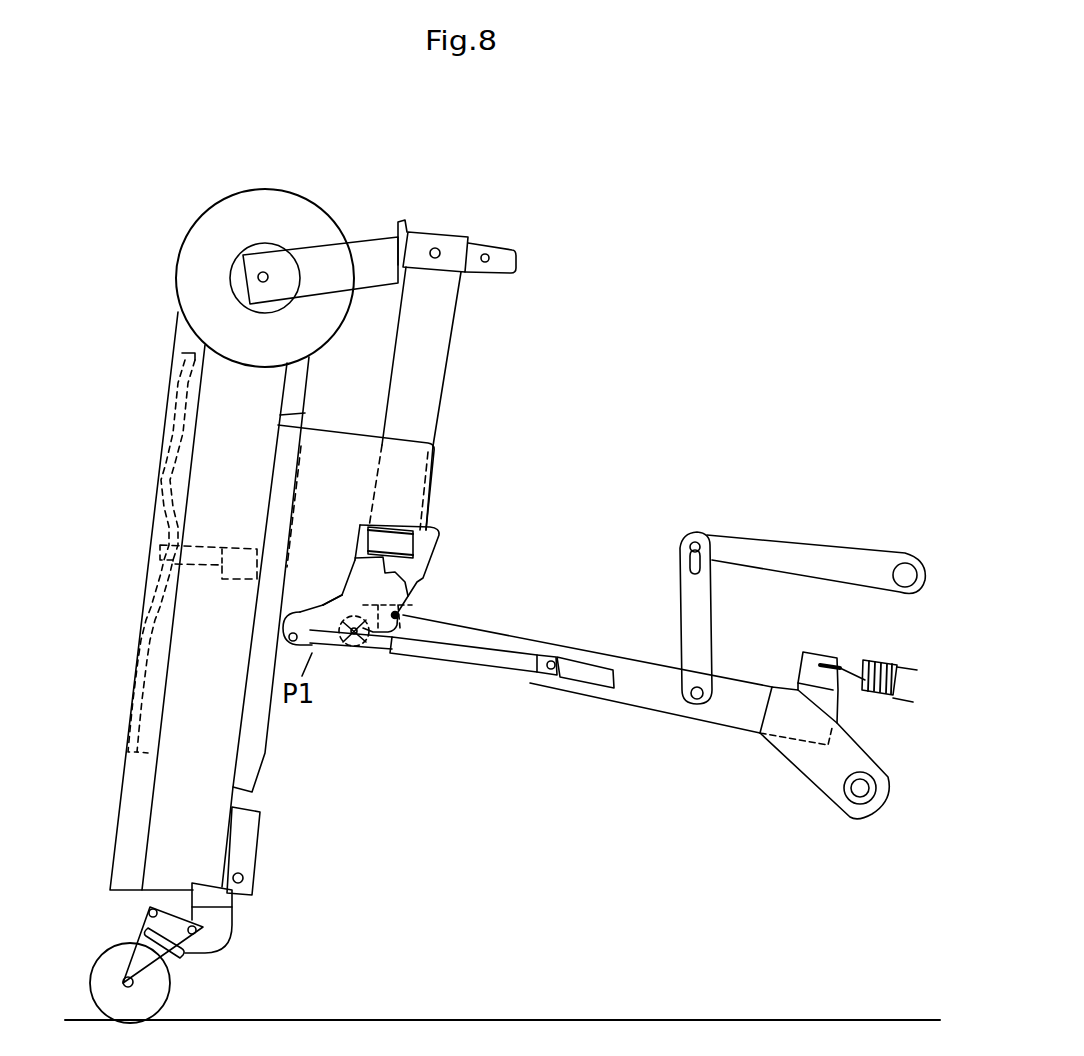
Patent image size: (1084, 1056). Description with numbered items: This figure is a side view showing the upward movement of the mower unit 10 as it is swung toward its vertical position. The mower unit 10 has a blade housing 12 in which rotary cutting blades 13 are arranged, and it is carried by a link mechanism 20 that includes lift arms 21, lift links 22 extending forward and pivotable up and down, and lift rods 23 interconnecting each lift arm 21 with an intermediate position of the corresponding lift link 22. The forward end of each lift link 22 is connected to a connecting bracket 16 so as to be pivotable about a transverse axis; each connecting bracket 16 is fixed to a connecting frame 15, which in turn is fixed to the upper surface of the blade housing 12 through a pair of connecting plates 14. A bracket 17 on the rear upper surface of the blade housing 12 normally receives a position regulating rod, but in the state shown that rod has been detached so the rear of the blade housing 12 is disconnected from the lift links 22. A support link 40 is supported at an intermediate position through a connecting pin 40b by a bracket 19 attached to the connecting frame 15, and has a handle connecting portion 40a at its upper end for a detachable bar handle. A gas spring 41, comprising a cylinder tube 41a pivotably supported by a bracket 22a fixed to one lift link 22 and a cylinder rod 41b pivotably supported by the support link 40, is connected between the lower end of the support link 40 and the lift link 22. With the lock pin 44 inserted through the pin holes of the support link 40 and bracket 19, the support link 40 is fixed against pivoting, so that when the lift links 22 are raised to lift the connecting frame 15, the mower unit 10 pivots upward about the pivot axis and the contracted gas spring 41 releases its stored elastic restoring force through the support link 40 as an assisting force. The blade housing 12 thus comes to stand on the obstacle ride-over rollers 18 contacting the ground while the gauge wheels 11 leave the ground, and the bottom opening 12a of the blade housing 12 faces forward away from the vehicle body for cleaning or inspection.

The mower unit 10 is at (484, 364).
The ground-engaging gauge wheel 11 is at (192, 271).
The blade housing 12 is at (290, 413).
The opening of the blade housing 12a is at (157, 502).
The rotary cutting blade 13 is at (147, 667).
The connecting plate 14 is at (433, 497).
The connecting frame 15 is at (393, 527).
The connecting bracket 16 is at (333, 577).
The bracket 17 is at (250, 858).
The obstacle ride-over roller 18 is at (100, 973).
The bracket 19 is at (338, 591).
The link mechanism 20 is at (533, 688).
The lift arm 21 is at (822, 553).
The lift link 22 is at (747, 670).
The bracket 22a is at (597, 652).
The lift rod 23 is at (704, 607).
The support link 40 is at (430, 578).
The handle connecting portion 40a is at (428, 548).
The connecting pin 40b is at (340, 651).
The gas spring 41 is at (470, 744).
The cylinder tube 41a is at (452, 657).
The cylinder rod 41b is at (377, 652).
The lock pin 44 is at (406, 612).